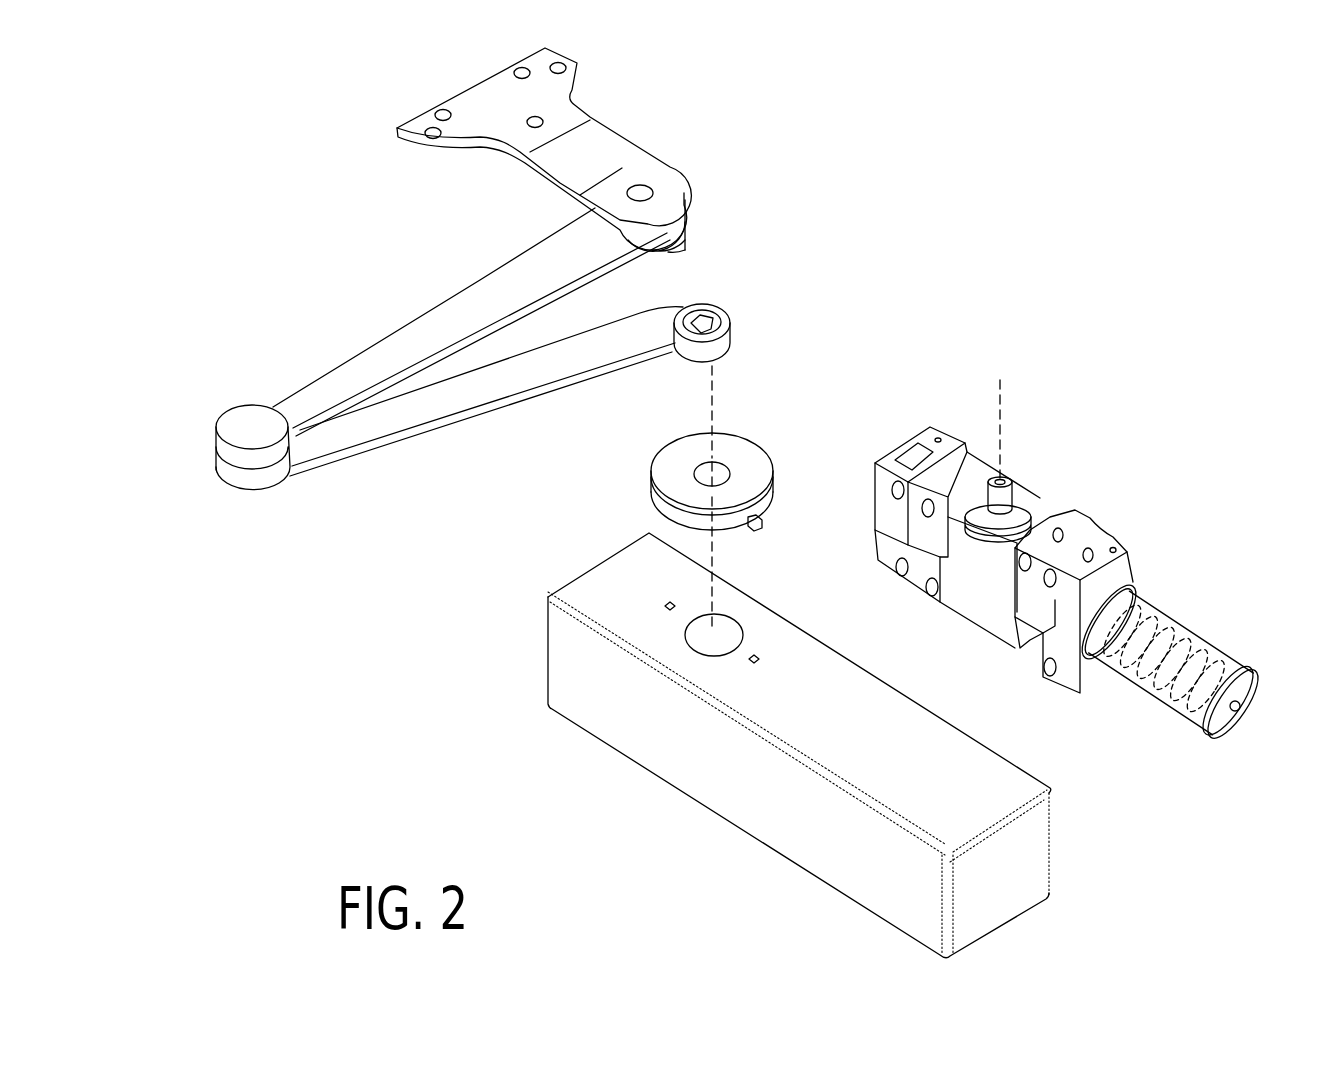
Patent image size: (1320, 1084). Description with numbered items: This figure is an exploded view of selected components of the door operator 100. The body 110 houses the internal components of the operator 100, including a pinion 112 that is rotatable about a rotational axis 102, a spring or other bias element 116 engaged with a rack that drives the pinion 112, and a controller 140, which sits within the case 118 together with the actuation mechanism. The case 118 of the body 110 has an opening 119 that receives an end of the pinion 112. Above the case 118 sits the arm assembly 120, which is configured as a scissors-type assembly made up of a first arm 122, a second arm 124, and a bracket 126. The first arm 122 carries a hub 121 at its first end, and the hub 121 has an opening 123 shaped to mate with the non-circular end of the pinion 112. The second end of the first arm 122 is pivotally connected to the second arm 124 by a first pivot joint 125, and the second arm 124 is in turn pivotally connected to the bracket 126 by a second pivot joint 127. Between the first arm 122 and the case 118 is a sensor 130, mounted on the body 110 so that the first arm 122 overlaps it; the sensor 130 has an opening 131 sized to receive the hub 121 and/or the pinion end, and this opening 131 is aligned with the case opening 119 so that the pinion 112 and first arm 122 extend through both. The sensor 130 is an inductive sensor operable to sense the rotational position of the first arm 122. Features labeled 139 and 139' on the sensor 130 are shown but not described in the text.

The operator 100 is at (1000, 215).
The rotational axis 102 is at (1004, 404).
The body 110 is at (1153, 530).
The pinion 112 is at (1006, 501).
The spring or other bias element 116 is at (1197, 633).
The case 118 is at (751, 841).
The opening 119 is at (722, 627).
The arm assembly 120 is at (262, 240).
The hub 121 is at (730, 334).
The first arm 122 is at (403, 448).
The opening 123 is at (706, 321).
The second arm 124 is at (413, 326).
The first pivot joint 125 is at (215, 470).
The bracket 126 is at (617, 150).
The second pivot joint 127 is at (688, 214).
The sensor 130 is at (661, 434).
The opening 131 is at (723, 462).
The adapter flange 139 is at (739, 474).
The locating tab 139' is at (799, 521).
The controller 140 is at (905, 446).